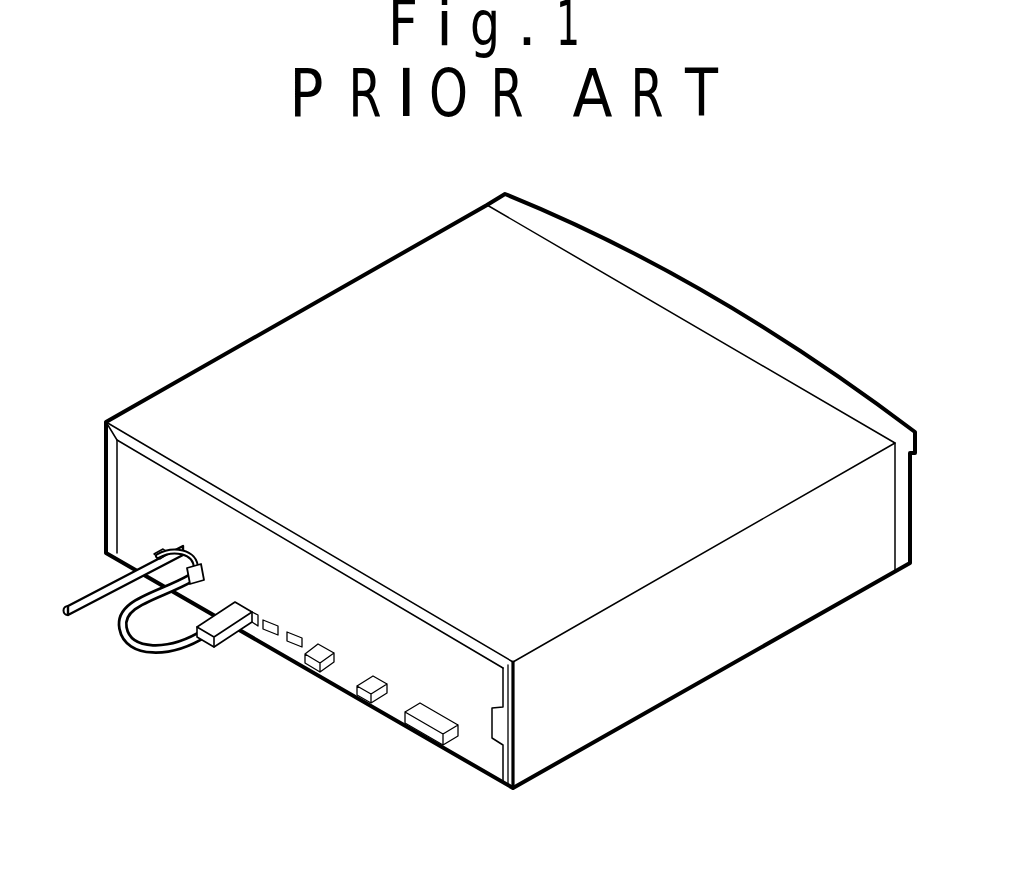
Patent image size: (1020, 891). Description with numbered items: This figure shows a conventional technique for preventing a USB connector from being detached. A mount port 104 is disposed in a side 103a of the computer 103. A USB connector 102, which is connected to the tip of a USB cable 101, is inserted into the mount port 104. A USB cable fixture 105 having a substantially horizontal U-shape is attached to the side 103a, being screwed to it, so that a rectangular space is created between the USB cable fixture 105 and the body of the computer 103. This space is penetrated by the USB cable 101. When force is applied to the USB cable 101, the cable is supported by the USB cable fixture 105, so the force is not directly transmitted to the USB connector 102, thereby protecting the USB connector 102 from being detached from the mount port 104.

The USB cable 101 is at (88, 615).
The USB connector 102 is at (220, 633).
The computer 103 is at (308, 345).
The side 103a is at (468, 712).
The mount port 104 is at (240, 628).
The USB cable fixture 105 is at (200, 570).